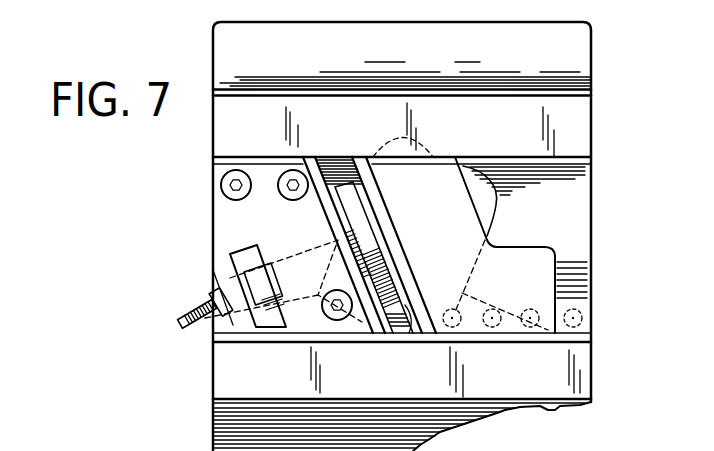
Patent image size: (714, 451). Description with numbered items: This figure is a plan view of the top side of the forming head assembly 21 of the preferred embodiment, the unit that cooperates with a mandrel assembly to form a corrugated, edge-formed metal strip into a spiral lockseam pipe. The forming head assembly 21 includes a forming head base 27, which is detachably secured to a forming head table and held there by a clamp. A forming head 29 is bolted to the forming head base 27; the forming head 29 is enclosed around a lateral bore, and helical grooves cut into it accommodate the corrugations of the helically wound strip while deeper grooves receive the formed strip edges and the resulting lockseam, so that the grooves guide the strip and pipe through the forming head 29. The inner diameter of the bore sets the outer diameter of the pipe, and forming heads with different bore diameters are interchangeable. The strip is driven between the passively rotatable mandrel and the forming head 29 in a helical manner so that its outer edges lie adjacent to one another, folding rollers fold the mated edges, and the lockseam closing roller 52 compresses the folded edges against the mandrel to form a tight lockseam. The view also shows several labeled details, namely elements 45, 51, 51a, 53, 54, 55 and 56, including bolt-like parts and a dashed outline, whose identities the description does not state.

The forming head assembly 21 is at (196, 256).
The forming head base 27 is at (213, 440).
The forming head 29 is at (578, 185).
The recess 45 is at (530, 262).
The bracket 51 is at (300, 250).
The bracket bolt head 51a is at (276, 318).
The lockseam closing roller 52 is at (403, 338).
The mounting plate 53 is at (212, 215).
The screws 54 is at (286, 169).
The bolt head 55 is at (213, 296).
The bolt 56 is at (178, 327).